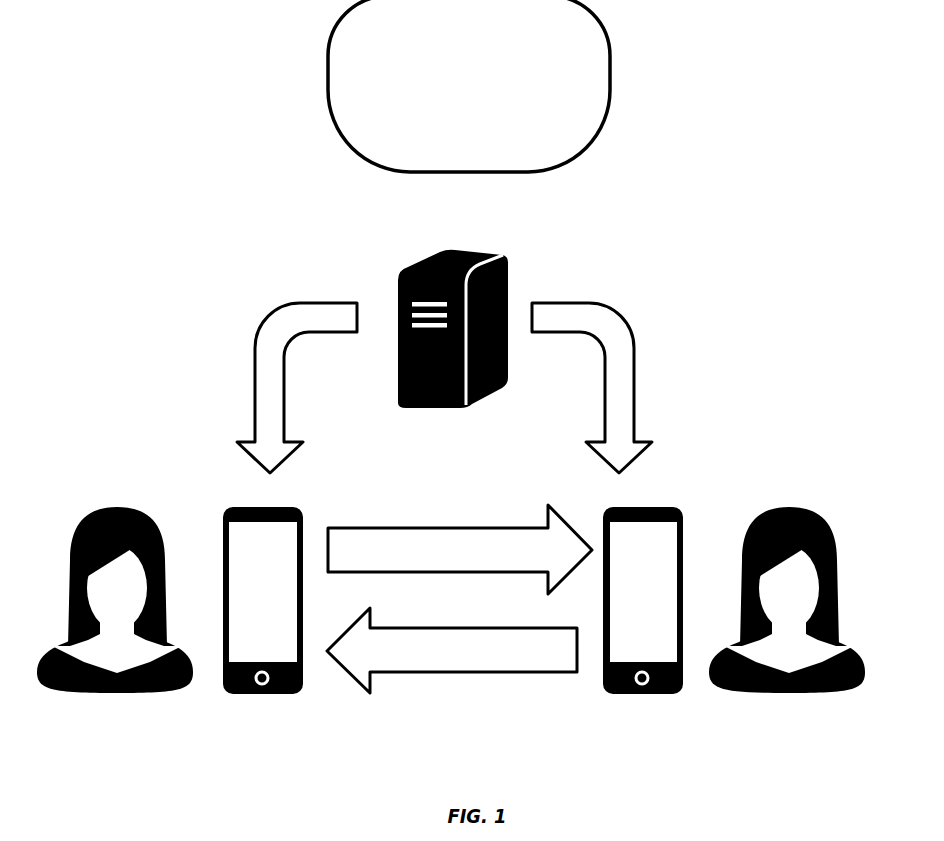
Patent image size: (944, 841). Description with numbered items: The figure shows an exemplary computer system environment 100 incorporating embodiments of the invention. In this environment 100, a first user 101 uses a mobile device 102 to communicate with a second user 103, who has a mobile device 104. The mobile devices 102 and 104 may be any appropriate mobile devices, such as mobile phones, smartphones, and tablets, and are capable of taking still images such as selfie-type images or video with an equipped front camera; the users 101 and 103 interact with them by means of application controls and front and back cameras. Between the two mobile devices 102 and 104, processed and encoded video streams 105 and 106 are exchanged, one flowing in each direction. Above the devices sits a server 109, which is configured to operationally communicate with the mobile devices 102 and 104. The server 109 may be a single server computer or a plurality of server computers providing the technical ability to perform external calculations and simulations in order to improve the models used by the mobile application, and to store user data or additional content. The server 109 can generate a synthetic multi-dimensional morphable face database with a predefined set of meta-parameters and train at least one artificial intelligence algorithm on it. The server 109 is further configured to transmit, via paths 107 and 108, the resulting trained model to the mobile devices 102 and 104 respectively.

The exemplary computer system environment 100 is at (451, 370).
The server 109 is at (469, 108).
The first user 101 is at (115, 624).
The mobile device 102 is at (263, 624).
The second user 103 is at (787, 624).
The mobile device 104 is at (643, 624).
The processed and encoded video stream 105 is at (452, 650).
The processed and encoded video stream 106 is at (460, 549).
The transmission path to first mobile device 107 is at (297, 388).
The transmission path to second mobile device 108 is at (592, 388).